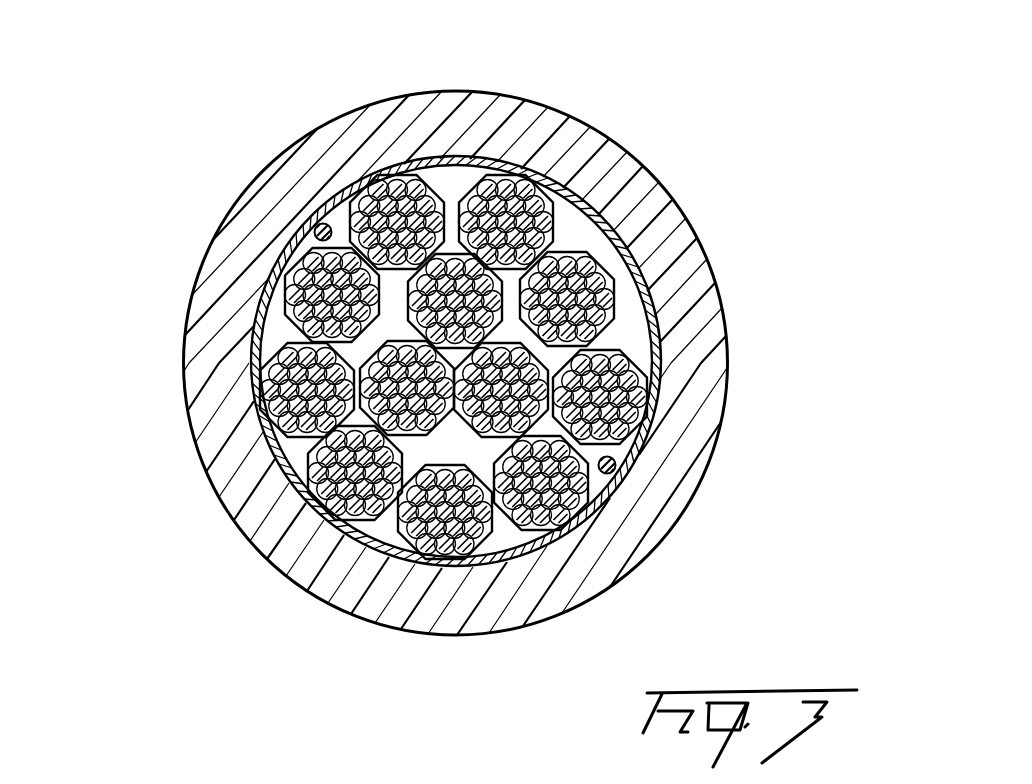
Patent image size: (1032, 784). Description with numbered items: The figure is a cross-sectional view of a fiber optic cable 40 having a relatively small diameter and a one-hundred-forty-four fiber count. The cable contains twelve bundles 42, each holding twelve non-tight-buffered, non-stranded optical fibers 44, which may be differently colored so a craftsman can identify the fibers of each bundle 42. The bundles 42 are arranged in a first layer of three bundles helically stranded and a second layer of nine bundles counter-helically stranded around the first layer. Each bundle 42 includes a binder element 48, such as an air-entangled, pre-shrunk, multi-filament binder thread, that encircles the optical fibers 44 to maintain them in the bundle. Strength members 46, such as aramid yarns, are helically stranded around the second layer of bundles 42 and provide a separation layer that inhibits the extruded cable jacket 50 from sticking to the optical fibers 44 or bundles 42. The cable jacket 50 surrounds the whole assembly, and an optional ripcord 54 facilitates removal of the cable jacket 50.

The fiber optic cable 40 is at (210, 160).
The bundle 42 is at (600, 352).
The optical fibers 44 is at (280, 352).
The strength members 46 is at (622, 232).
The binder element 48 is at (603, 182).
The cable jacket 50 is at (548, 118).
The ripcord 54 is at (313, 229).